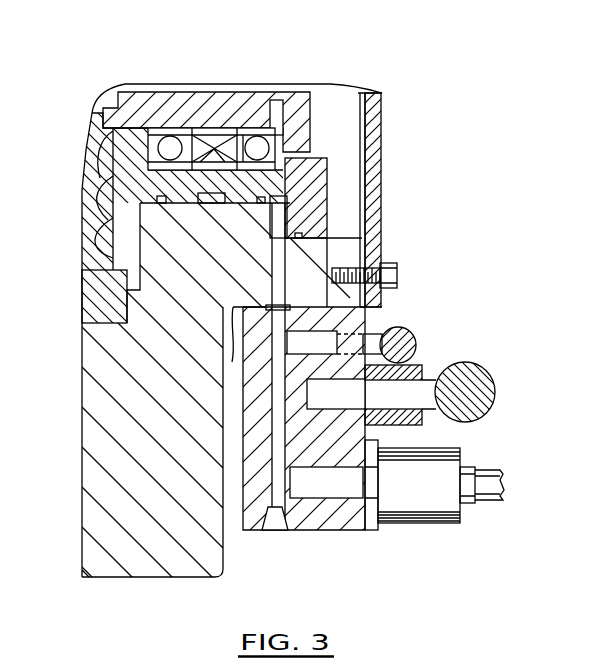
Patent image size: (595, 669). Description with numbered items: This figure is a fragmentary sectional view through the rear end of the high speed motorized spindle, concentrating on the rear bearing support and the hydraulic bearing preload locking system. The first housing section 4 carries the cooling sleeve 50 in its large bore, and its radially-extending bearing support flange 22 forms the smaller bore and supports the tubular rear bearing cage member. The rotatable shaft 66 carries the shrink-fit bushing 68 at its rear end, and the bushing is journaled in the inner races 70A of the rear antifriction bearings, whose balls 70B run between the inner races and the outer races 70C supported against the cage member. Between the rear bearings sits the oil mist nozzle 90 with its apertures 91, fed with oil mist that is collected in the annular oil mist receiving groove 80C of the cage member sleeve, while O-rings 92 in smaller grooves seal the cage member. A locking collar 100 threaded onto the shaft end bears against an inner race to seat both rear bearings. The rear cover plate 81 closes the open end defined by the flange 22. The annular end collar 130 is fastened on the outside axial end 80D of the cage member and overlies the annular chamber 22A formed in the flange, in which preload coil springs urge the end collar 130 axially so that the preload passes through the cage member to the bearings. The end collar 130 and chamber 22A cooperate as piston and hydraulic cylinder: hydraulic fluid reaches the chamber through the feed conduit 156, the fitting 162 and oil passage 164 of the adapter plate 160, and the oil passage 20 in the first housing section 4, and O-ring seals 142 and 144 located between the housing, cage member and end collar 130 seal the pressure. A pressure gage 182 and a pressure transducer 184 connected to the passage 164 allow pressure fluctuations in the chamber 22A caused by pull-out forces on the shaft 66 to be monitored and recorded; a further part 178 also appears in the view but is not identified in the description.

The first housing section 4 is at (147, 575).
The oil passage 20 is at (385, 305).
The bearing support flange 22 is at (145, 228).
The annular chamber 22A is at (270, 250).
The cooling sleeve 50 is at (84, 322).
The shaft 66 is at (190, 104).
The shrink-fit bushing 68 is at (152, 128).
The inner races 70A is at (150, 131).
The balls 70B is at (103, 130).
The outer races 70C is at (112, 178).
The oil mist receiving groove 80C is at (168, 204).
The outside axial end 80D is at (300, 178).
The rear cover plate 81 is at (376, 92).
The oil mist nozzle 90 is at (222, 152).
The apertures 91 is at (245, 146).
The O-rings 92 is at (170, 258).
The locking collar 100 is at (300, 133).
The end collar 130 is at (330, 172).
The O-ring seal 142 is at (352, 268).
The O-ring seal 144 is at (300, 202).
The feed conduit 156 is at (490, 500).
The adapter plate 160 is at (300, 528).
The fitting 162 is at (413, 523).
The oil passage 164 is at (320, 447).
The plug 178 is at (594, 409).
The pressure gage 182 is at (412, 342).
The pressure transducer 184 is at (478, 392).